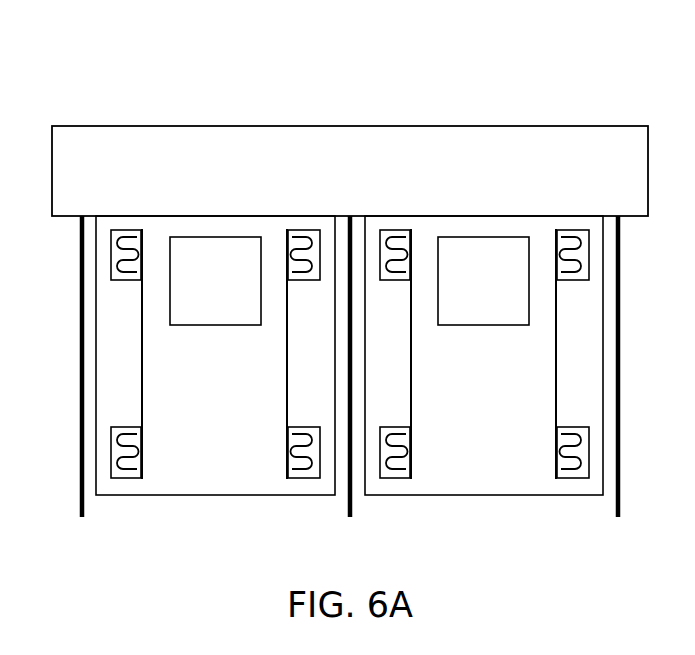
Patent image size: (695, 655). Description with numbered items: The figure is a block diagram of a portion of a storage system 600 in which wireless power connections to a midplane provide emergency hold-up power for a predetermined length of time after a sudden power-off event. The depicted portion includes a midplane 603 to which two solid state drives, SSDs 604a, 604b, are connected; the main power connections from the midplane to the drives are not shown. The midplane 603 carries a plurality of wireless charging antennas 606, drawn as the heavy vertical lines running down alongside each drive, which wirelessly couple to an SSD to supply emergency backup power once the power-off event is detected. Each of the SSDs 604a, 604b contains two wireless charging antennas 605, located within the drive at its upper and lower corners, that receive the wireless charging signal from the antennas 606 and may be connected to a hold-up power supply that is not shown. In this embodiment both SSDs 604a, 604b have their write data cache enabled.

The storage system 600 is at (134, 92).
The midplane 603 is at (350, 171).
The SSD 604a is at (215, 355).
The SSD 604b is at (484, 355).
The wireless charging antenna 605 is at (143, 370).
The wireless charging antenna 606 is at (75, 510).